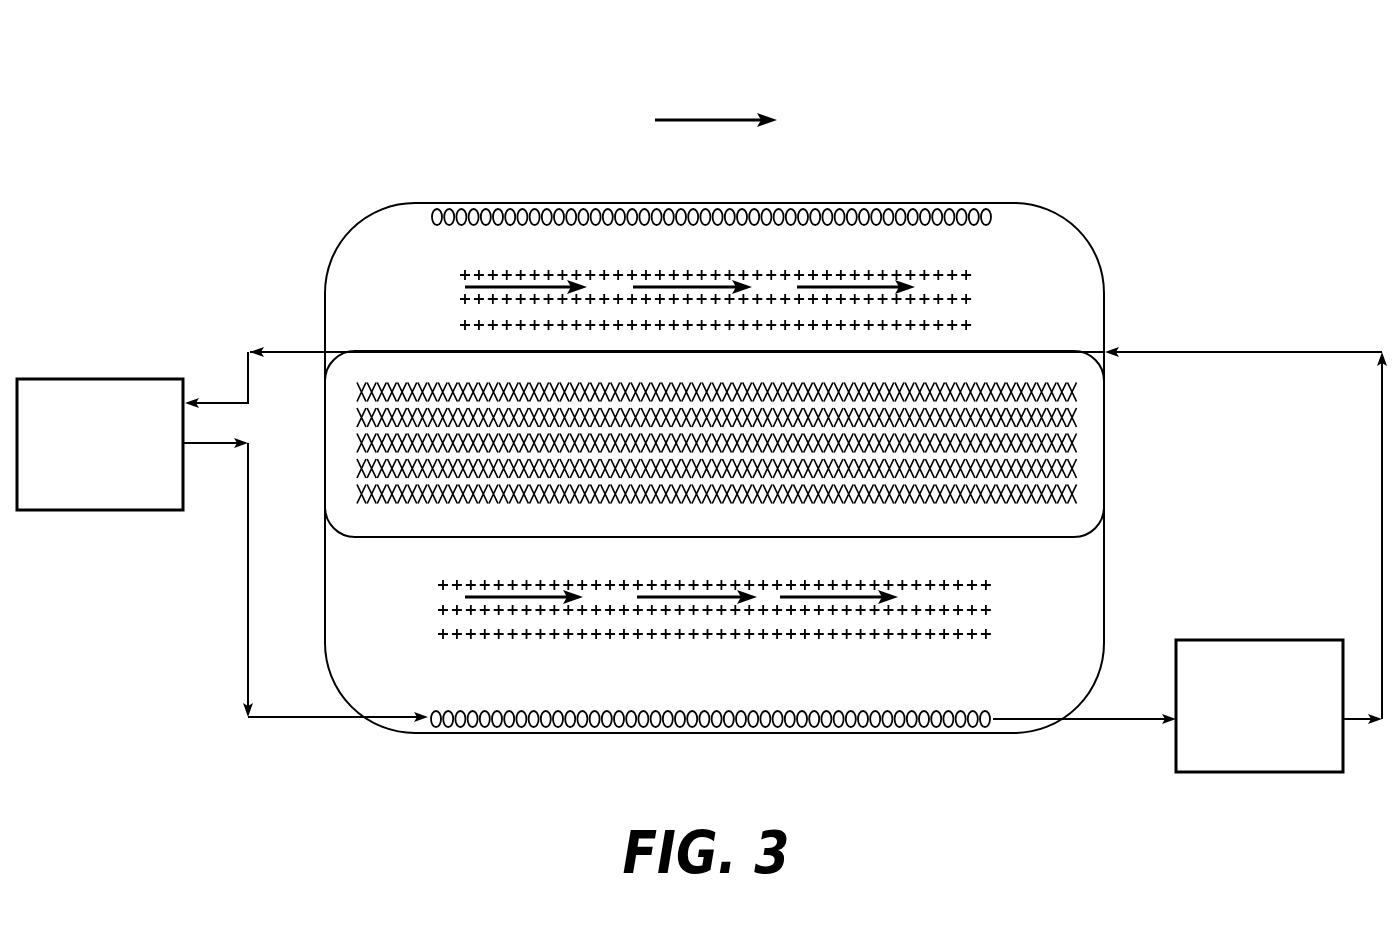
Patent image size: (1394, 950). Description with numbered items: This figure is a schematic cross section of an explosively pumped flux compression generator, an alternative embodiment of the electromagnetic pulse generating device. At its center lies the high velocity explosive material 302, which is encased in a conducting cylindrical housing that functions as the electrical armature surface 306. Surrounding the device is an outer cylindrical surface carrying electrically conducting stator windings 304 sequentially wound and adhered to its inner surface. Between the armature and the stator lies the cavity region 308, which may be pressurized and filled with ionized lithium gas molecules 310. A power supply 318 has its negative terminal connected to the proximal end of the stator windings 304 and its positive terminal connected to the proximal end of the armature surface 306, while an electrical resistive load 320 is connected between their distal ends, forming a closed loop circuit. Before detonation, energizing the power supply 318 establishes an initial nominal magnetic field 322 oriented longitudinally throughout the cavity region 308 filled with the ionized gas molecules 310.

The high velocity explosive material 302 is at (1000, 366).
The stator windings 304 is at (505, 835).
The armature surface 306 is at (398, 345).
The cavity region 308 is at (875, 255).
The ionized gas molecules 310 is at (976, 653).
The power supply 318 is at (84, 485).
The electrical resistive load 320 is at (1244, 745).
The magnetic field 322 is at (707, 119).